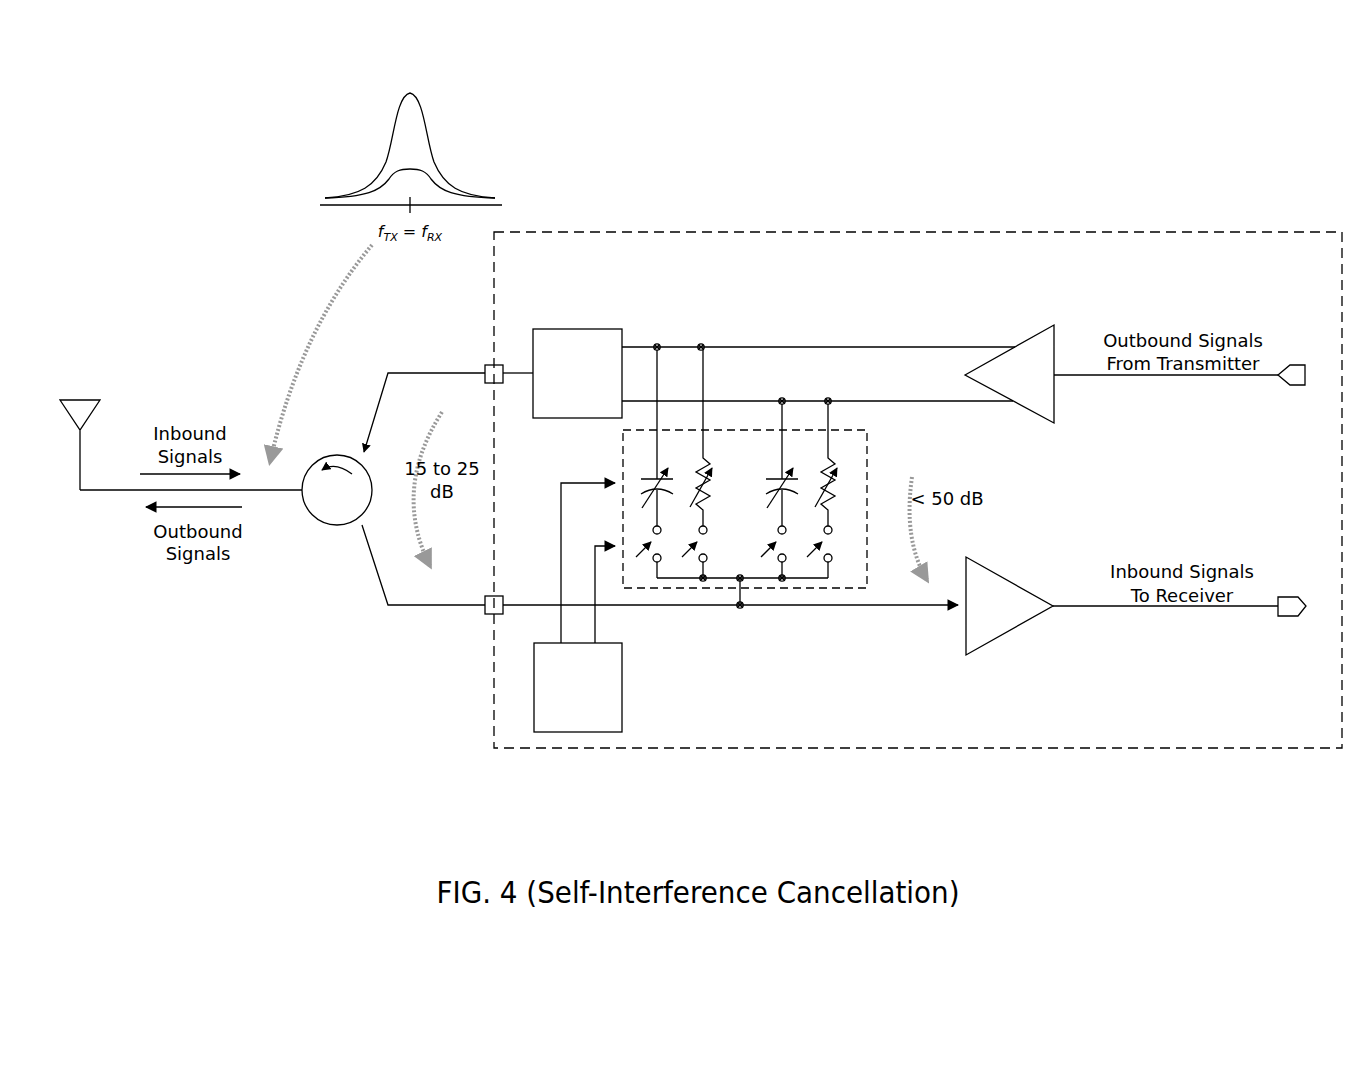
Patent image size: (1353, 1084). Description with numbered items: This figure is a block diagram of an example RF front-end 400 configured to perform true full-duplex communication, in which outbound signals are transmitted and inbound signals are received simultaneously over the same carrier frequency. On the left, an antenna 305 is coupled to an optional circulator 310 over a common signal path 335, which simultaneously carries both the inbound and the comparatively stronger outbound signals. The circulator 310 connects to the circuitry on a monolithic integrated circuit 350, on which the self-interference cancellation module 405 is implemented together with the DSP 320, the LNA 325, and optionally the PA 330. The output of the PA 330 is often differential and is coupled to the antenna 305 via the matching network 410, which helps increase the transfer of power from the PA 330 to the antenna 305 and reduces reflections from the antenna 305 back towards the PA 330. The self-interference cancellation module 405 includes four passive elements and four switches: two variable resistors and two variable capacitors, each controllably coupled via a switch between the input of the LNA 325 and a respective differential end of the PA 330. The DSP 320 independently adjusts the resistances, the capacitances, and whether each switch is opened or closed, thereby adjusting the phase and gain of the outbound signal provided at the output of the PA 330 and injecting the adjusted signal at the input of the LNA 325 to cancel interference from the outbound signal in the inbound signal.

The antenna 305 is at (96, 417).
The circulator 310 is at (343, 452).
The digital signal processor (DSP) 320 is at (622, 690).
The LNA 325 is at (1026, 623).
The PA 330 is at (1031, 337).
The common signal path 335 is at (112, 490).
The monolithic integrated circuit (IC) 350 is at (920, 232).
The RF front-end 400 is at (250, 740).
The self-interference cancellation module 405 is at (745, 428).
The matching network (MN) 410 is at (580, 328).